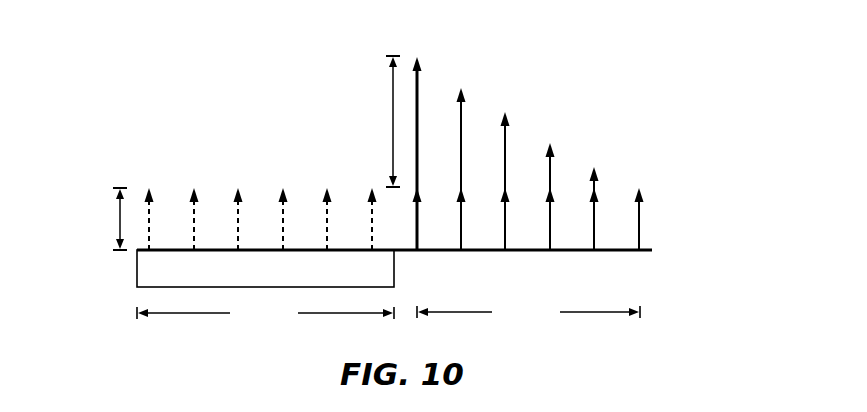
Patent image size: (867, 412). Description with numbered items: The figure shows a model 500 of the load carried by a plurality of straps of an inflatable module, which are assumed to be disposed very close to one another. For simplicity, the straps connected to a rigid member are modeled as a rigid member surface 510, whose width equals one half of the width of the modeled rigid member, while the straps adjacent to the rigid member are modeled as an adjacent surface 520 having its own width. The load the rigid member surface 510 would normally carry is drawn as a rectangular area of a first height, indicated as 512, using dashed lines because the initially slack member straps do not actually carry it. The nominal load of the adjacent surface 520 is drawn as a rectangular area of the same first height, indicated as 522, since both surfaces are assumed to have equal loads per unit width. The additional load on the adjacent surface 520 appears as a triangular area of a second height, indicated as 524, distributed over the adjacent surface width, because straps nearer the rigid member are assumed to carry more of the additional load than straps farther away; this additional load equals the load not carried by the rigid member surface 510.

The model 500 is at (183, 87).
The rigid member surface 510 is at (137, 276).
The load of the rigid member surface 512 is at (78, 187).
The adjacent surface 520 is at (646, 250).
The nominal load of the adjacent surface 522 is at (665, 185).
The additional load on the adjacent surface 524 is at (665, 54).